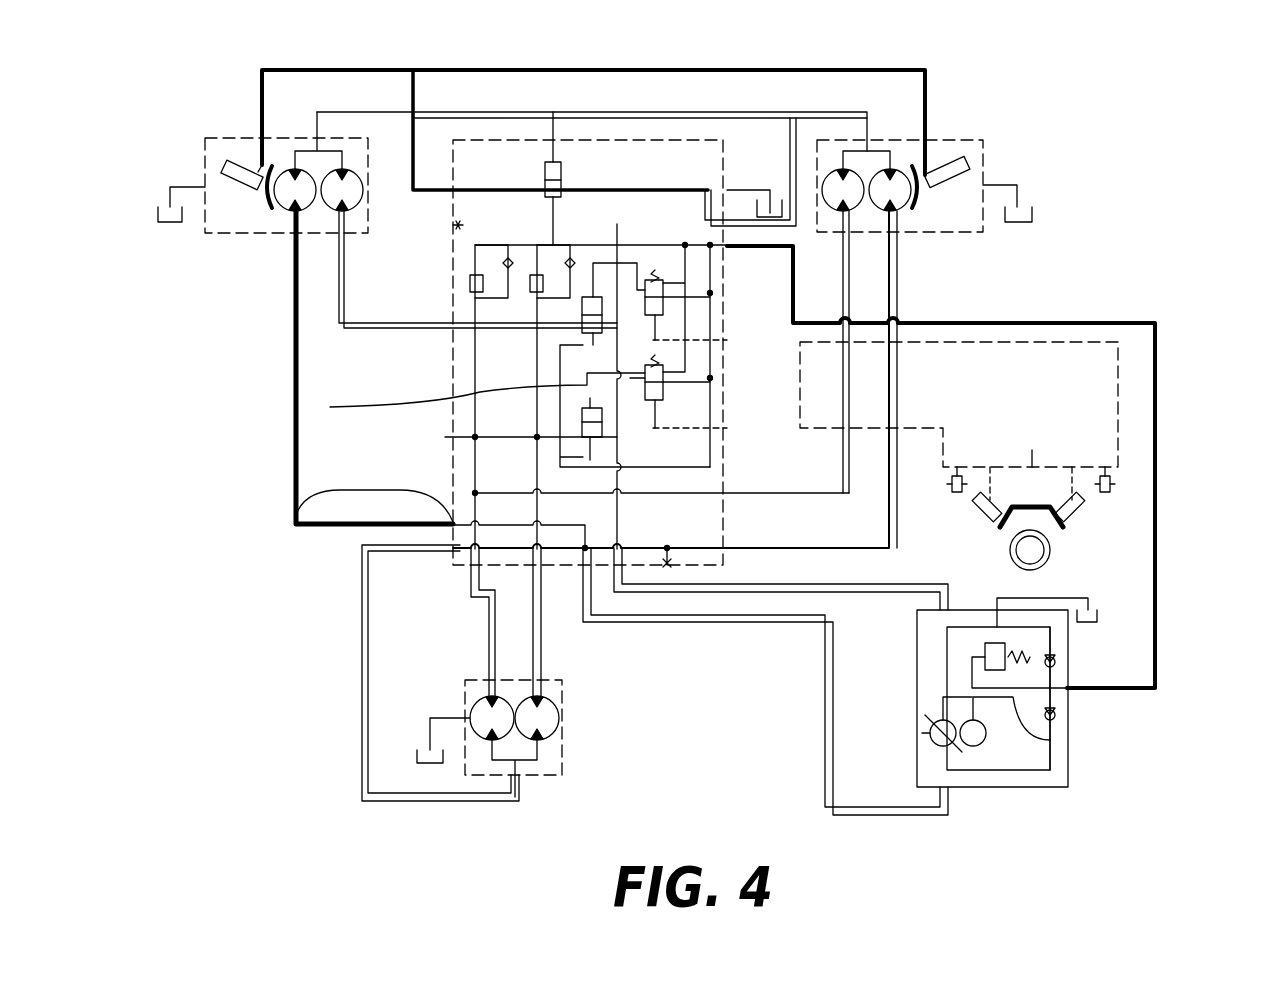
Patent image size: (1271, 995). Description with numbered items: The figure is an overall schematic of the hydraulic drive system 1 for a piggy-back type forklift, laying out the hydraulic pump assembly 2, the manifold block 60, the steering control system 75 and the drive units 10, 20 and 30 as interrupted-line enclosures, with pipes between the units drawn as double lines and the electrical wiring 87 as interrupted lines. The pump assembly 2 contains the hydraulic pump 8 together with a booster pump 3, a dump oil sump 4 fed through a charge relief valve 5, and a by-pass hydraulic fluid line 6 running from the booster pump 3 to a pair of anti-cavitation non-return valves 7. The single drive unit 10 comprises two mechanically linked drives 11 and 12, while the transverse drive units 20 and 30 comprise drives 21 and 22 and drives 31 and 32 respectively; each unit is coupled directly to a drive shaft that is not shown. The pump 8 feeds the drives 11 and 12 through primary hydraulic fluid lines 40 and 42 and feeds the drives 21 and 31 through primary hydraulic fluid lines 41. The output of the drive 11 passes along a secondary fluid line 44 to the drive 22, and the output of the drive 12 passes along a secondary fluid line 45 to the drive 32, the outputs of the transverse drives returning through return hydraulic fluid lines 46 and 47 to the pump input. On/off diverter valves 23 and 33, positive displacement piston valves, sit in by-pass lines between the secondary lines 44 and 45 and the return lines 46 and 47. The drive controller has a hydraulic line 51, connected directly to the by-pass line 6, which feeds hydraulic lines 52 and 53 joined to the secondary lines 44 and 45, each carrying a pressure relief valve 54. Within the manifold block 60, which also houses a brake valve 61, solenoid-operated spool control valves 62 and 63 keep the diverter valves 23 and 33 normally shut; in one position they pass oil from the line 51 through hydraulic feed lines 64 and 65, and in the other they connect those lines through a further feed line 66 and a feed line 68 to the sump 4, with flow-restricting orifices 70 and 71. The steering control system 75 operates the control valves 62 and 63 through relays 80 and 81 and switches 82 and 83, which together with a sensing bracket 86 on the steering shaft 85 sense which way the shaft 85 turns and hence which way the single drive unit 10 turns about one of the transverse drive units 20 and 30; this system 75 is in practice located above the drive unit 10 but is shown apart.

The hydraulic drive system 1 is at (1133, 168).
The hydraulic pump assembly 2 is at (1162, 770).
The booster pump 3 is at (1050, 768).
The dump oil sump 4 is at (762, 195).
The charge relief valve 5 is at (1010, 650).
The by-pass hydraulic fluid line 6 is at (987, 738).
The anti-cavitation non-return valves 7 is at (1055, 662).
The hydraulic pump 8 is at (947, 722).
The single drive unit 10 is at (405, 700).
The drive 11 is at (548, 718).
The drive 12 is at (480, 718).
The transverse drive unit 20 is at (272, 122).
The drive 21 is at (220, 172).
The drive 22 is at (257, 150).
The on/off diverter valve 23 is at (330, 407).
The transverse drive unit 30 is at (930, 120).
The drive 31 is at (1000, 185).
The drive 32 is at (960, 142).
The on/off diverter valve 33 is at (445, 437).
The primary hydraulic fluid line 40 is at (688, 620).
The primary hydraulic fluid lines 41 is at (296, 372).
The primary hydraulic fluid line 42 is at (453, 552).
The secondary fluid line 44 is at (340, 280).
The secondary fluid line 45 is at (478, 610).
The return hydraulic fluid line 46 is at (460, 225).
The return hydraulic fluid line 47 is at (725, 190).
The hydraulic line 51 is at (1160, 325).
The hydraulic line 52 is at (598, 262).
The hydraulic line 53 is at (548, 162).
The pressure relief valve 54 is at (465, 290).
The manifold block 60 is at (443, 138).
The brake valve 61 is at (545, 272).
The control valve 62 is at (660, 320).
The control valve 63 is at (658, 400).
The hydraulic feed line 64 is at (645, 295).
The hydraulic feed line 65 is at (582, 421).
The further hydraulic feed line 66 is at (690, 300).
The hydraulic feed line 68 is at (710, 355).
The orifice 70 is at (667, 390).
The orifice 71 is at (675, 312).
The steering control system 75 is at (1100, 410).
The relay 80 is at (1112, 483).
The relay 81 is at (1105, 475).
The switch 82 is at (1075, 520).
The switch 83 is at (1075, 505).
The steering shaft 85 is at (1040, 553).
The sensing bracket 86 is at (1060, 528).
The electrical wiring 87 is at (945, 340).